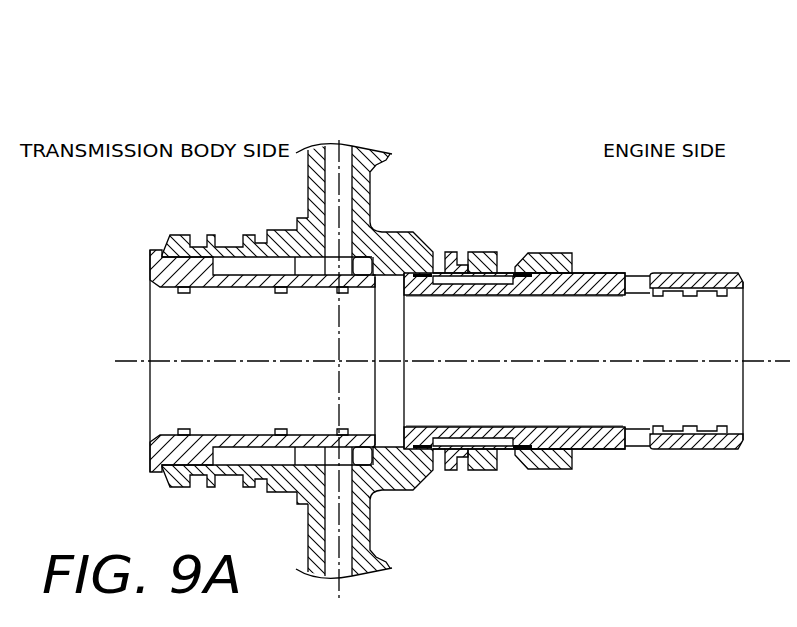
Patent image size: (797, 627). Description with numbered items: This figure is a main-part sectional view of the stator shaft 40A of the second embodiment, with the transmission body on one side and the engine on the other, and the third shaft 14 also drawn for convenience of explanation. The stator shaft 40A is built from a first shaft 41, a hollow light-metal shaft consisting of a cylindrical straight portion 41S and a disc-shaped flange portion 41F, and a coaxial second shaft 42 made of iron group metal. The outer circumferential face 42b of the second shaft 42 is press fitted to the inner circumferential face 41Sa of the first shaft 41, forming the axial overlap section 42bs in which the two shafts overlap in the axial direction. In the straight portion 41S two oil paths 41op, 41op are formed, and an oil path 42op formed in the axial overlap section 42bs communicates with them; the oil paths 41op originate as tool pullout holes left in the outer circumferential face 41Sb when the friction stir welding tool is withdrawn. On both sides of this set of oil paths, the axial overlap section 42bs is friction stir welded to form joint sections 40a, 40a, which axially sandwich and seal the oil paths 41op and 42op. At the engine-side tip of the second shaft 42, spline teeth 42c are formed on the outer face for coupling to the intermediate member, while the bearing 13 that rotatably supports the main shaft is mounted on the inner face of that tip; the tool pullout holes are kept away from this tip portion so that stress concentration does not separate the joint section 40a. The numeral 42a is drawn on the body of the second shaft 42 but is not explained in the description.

The stator shaft 40A is at (476, 82).
The first shaft 41 is at (460, 160).
The flange portion 41F is at (387, 185).
The straight portion 41S is at (425, 228).
The inner circumferential face 41Sa is at (373, 278).
The outer circumferential face 41Sb is at (567, 250).
The oil paths 41op is at (507, 252).
The third shaft 14 is at (243, 281).
The second shaft 42 is at (676, 229).
The pipe body 42a is at (597, 296).
The outer circumferential face 42b is at (608, 271).
The axial overlap section 42bs is at (551, 272).
The spline teeth 42c is at (707, 272).
The oil path 42op is at (458, 283).
The joint sections 40a is at (527, 290).
The bearing 13 is at (703, 294).